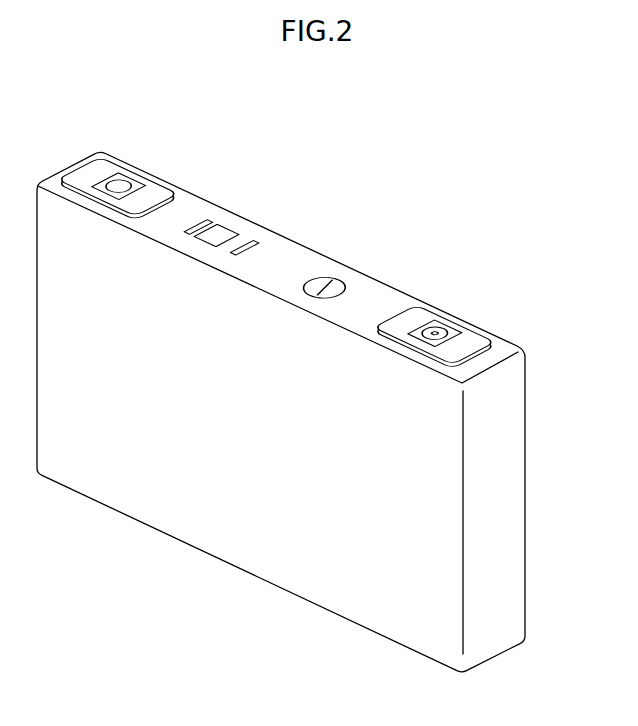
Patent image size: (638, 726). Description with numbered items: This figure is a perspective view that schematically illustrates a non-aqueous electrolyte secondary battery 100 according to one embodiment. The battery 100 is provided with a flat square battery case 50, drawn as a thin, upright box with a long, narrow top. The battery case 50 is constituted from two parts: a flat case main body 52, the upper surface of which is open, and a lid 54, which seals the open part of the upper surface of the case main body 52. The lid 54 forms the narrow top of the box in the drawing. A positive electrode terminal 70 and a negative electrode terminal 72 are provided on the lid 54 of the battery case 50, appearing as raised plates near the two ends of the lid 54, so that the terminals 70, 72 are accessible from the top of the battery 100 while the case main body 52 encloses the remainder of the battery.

The non-aqueous electrolyte secondary battery 100 is at (282, 391).
The battery case 50 is at (295, 545).
The case main body 52 is at (197, 505).
The lid 54 is at (280, 247).
The positive electrode terminal 70 is at (130, 177).
The negative electrode terminal 72 is at (442, 330).